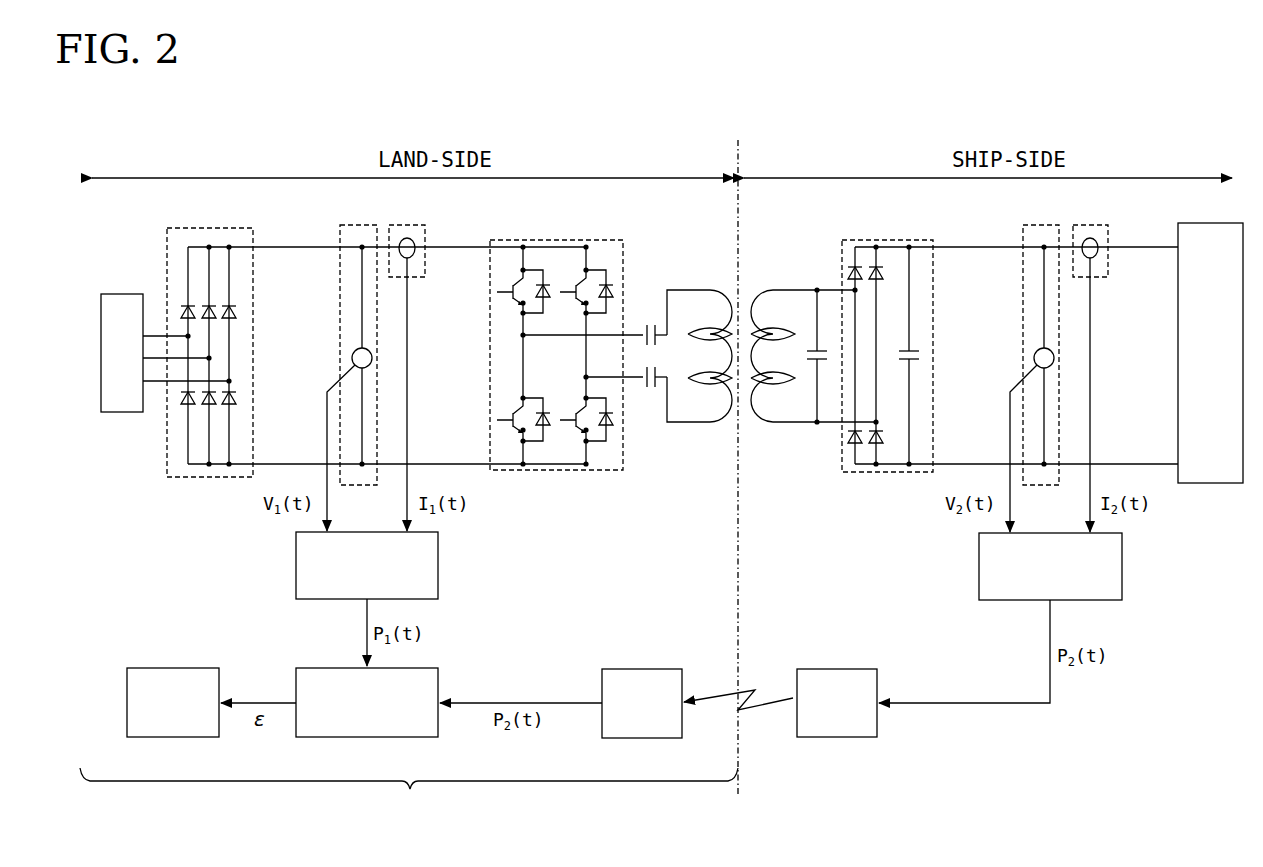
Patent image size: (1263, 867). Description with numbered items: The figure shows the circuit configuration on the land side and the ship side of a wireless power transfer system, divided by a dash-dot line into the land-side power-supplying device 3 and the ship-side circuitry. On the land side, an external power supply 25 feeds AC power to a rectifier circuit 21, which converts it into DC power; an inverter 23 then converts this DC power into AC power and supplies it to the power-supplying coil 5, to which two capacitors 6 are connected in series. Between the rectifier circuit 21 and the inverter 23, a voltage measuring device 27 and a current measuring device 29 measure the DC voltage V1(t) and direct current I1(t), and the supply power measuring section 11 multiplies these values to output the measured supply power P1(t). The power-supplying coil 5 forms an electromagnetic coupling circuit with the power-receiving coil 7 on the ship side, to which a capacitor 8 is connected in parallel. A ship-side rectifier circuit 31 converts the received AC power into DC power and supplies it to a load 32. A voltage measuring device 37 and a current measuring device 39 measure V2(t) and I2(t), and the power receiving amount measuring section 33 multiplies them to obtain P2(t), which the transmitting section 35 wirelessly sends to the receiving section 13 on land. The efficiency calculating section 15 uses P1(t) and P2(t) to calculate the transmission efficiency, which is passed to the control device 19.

The power-supplying device 3 is at (409, 798).
The power-supplying coil 5 is at (722, 290).
The capacitors 6 is at (650, 322).
The power-receiving coil 7 is at (758, 290).
The capacitor 8 is at (824, 368).
The supply power measuring section 11 is at (438, 548).
The receiving section 13 is at (622, 669).
The efficiency calculating section 15 is at (310, 676).
The control device 19 is at (137, 668).
The rectifier circuit 21 is at (205, 228).
The inverter 23 is at (553, 240).
The external power supply 25 is at (128, 294).
The voltage measuring device 27 is at (356, 225).
The current measuring device 29 is at (407, 225).
The rectifier circuit 31 is at (888, 240).
The load 32 is at (1210, 353).
The power receiving amount measuring section 33 is at (1122, 566).
The transmitting section 35 is at (818, 669).
The voltage measuring device 37 is at (1040, 225).
The current measuring device 39 is at (1090, 225).